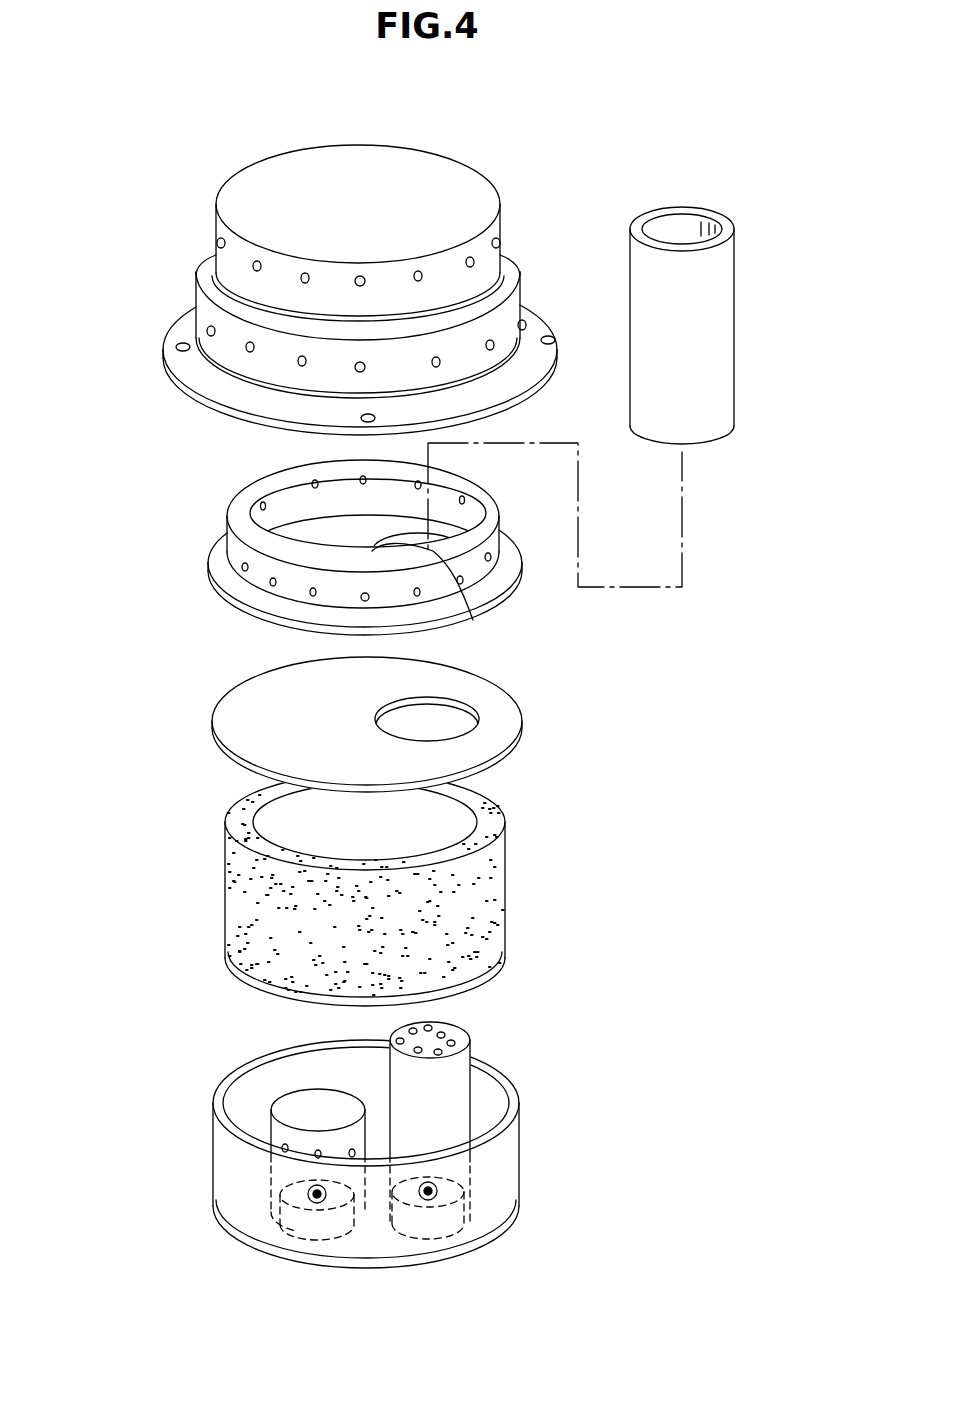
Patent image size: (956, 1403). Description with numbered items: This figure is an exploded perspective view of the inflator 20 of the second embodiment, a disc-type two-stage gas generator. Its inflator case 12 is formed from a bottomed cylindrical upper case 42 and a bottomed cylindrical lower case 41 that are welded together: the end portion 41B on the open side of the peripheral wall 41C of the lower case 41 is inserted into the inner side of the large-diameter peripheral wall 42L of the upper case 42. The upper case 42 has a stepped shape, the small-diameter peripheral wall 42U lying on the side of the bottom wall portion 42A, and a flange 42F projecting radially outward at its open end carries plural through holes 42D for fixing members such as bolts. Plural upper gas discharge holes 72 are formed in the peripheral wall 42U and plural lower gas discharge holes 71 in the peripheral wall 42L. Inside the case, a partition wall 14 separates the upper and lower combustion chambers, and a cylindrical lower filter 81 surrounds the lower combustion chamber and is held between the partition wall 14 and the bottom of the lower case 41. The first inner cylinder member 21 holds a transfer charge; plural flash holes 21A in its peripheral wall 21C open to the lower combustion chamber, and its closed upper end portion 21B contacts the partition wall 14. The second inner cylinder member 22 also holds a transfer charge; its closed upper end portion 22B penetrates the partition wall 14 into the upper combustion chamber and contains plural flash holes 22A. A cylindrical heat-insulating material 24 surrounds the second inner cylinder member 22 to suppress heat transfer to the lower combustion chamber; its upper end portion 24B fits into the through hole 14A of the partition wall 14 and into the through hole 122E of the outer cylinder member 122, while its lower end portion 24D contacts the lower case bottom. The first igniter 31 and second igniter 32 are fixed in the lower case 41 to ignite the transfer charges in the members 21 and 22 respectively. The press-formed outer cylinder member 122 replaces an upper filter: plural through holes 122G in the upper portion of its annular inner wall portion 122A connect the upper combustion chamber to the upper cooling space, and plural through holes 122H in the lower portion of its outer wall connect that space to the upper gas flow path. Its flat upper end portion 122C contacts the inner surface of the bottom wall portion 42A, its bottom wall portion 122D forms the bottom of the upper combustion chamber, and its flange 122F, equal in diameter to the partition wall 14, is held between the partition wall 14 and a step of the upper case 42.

The inflator 20 is at (590, 124).
The inflator case 12 is at (350, 672).
The upper case 42 is at (432, 140).
The bottom wall portion 42A is at (306, 163).
The peripheral wall 42U is at (498, 258).
The peripheral wall 42L is at (510, 318).
The flange 42F is at (182, 378).
The through holes 42D is at (548, 337).
The upper gas discharge holes 72 is at (419, 271).
The lower gas discharge holes 71 is at (298, 364).
The heat-insulating material 24 is at (733, 334).
The upper end portion 24B is at (680, 222).
The lower end portion 24D is at (712, 448).
The outer cylinder member 122 is at (224, 513).
The inner wall portion 122A is at (462, 497).
The upper end portion 122C is at (490, 512).
The bottom wall portion 122D is at (250, 515).
The through hole 122E is at (452, 608).
The flange 122F is at (233, 577).
The through holes 122G is at (315, 488).
The through holes 122H is at (310, 595).
The partition wall 14 is at (209, 711).
The through hole 14A is at (480, 720).
The lower filter 81 is at (224, 858).
The lower case 41 is at (206, 1194).
The end portion 41B is at (518, 1104).
The peripheral wall 41C is at (516, 1162).
The first inner cylinder member 21 is at (258, 1104).
The flash holes 21A is at (216, 1140).
The upper end portion 21B is at (268, 1104).
The peripheral wall 21C is at (370, 1120).
The second inner cylinder member 22 is at (470, 1098).
The flash holes 22A is at (449, 1036).
The upper end portion 22B is at (392, 1036).
The first igniter 31 is at (268, 1213).
The second igniter 32 is at (478, 1212).